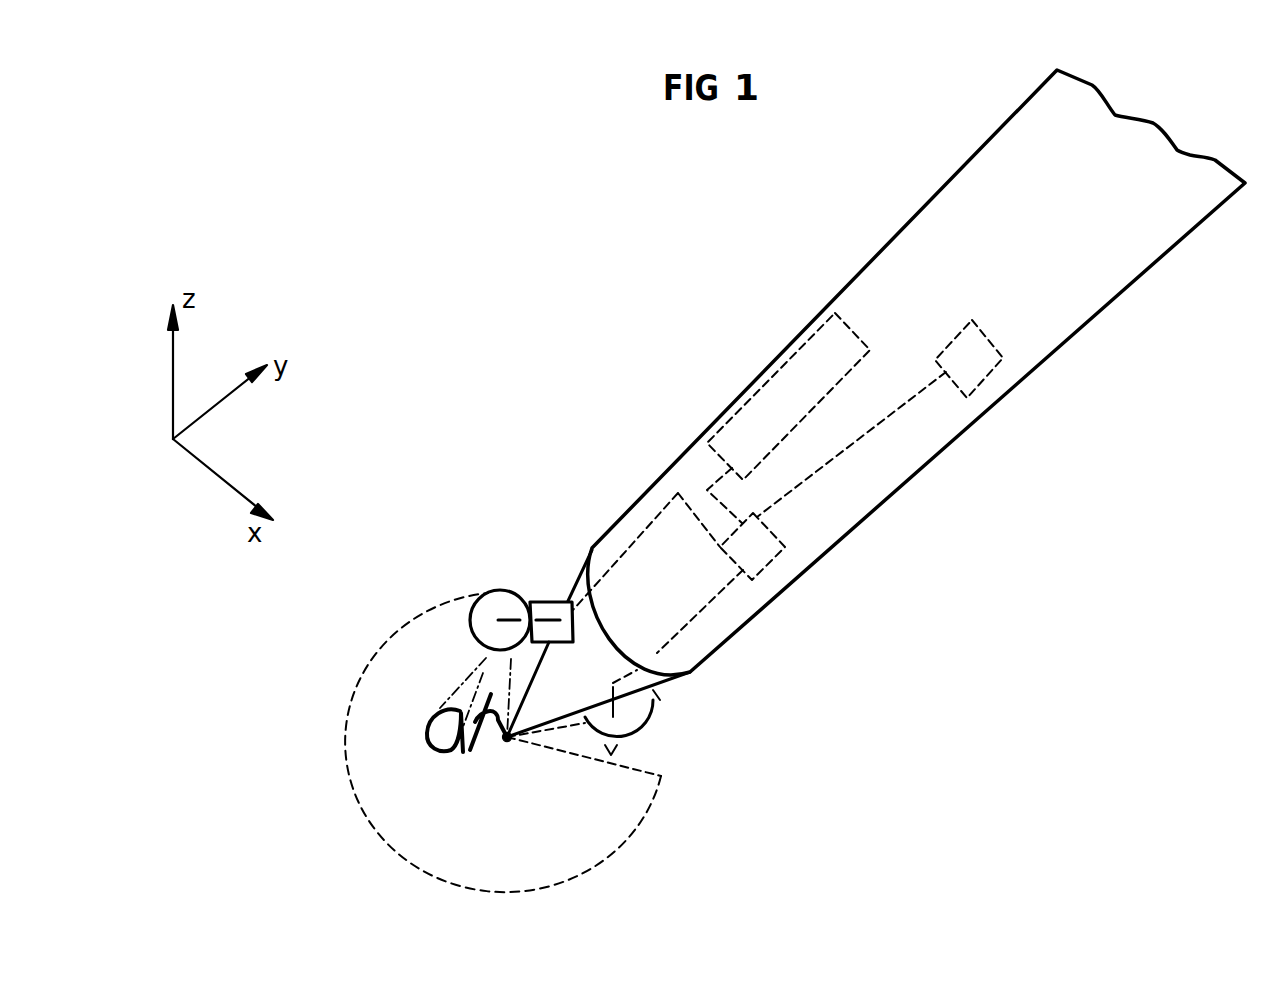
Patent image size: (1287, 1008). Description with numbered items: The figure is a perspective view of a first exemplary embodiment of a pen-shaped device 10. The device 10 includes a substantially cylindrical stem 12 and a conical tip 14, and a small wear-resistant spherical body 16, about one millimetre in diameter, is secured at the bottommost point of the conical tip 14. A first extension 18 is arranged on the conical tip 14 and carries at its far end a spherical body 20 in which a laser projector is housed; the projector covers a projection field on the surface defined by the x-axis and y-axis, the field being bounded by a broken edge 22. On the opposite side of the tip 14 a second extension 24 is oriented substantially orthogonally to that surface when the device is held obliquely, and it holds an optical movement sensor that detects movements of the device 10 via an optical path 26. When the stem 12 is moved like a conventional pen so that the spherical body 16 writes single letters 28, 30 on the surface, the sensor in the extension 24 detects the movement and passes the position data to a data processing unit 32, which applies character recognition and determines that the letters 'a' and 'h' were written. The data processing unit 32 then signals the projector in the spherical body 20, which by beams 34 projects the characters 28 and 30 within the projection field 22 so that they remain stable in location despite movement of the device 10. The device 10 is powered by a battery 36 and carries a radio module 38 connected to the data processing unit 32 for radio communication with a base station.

The device 10 is at (667, 249).
The stem 12 is at (873, 473).
The conical tip 14 is at (575, 597).
The wear-resistant spherical body 16 is at (510, 742).
The first extension 18 is at (547, 610).
The spherical body 20 is at (507, 603).
The broken edge 22 is at (343, 743).
The second extension 24 is at (653, 703).
The optical path 26 is at (618, 750).
The letter 28 is at (438, 765).
The letter 30 is at (470, 765).
The data processing unit 32 is at (767, 560).
The beams 34 is at (480, 663).
The battery 36 is at (783, 378).
The radio module 38 is at (988, 367).